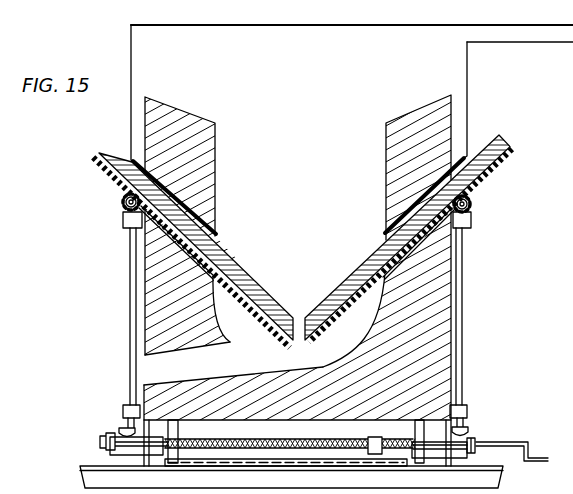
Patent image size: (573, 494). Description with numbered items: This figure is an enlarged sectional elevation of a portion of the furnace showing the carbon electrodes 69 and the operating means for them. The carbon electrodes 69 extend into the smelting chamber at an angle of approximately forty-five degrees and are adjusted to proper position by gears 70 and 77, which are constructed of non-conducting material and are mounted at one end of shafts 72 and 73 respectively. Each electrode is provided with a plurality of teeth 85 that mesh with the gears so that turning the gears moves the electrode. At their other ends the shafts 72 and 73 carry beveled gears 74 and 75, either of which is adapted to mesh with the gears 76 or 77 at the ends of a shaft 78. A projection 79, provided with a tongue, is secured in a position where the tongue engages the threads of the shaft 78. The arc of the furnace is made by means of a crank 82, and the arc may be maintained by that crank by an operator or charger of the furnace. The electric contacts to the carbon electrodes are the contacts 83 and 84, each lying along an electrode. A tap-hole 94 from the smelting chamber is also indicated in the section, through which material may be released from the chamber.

The carbon electrodes 69 is at (343, 286).
The gear 70 is at (122, 207).
The shaft 72 is at (129, 257).
The shaft 73 is at (463, 265).
The beveled gear 74 is at (121, 430).
The beveled gear 75 is at (470, 436).
The gear 76 is at (98, 441).
The gear 77 is at (473, 208).
The shaft 78 is at (271, 448).
The projection 79 is at (376, 447).
The crank 82 is at (530, 449).
The electric contact 83 is at (132, 158).
The electric contact 84 is at (462, 159).
The teeth 85 is at (126, 190).
The tap-hole 94 is at (233, 363).